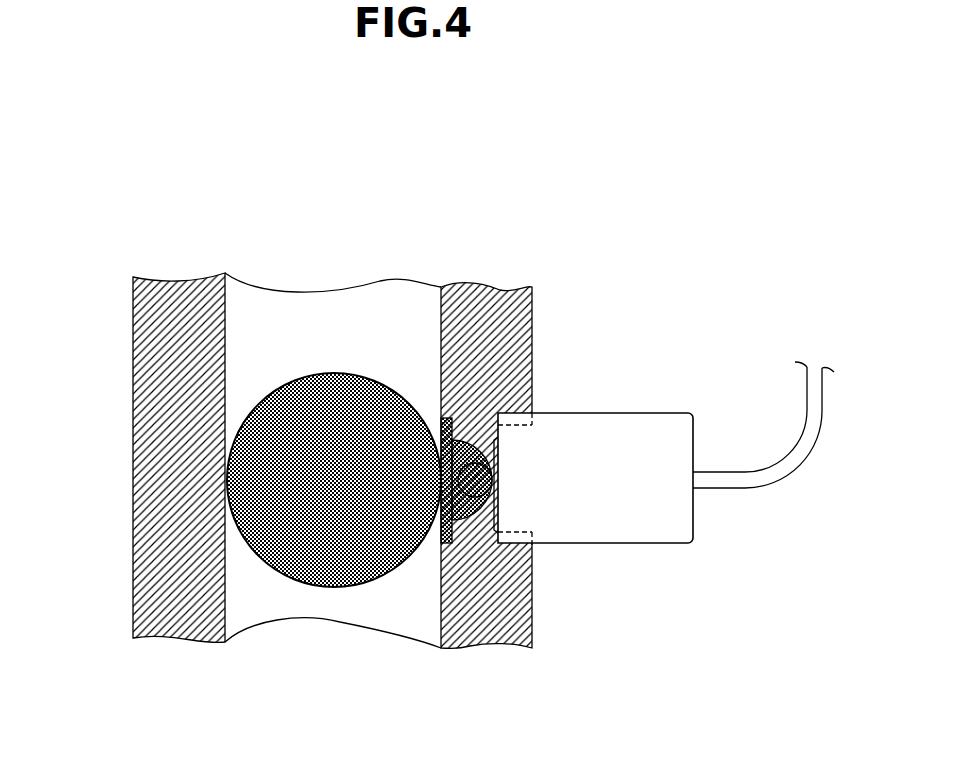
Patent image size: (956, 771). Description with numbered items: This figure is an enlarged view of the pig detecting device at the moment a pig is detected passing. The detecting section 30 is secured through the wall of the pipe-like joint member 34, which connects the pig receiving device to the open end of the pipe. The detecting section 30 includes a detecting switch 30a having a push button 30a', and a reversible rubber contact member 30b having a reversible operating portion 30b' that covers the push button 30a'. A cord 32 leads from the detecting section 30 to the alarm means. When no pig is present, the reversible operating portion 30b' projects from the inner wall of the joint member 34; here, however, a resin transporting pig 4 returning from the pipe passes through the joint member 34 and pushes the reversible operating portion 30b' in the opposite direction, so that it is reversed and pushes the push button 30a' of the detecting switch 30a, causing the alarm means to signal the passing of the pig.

The pipe-like joint member 34 is at (157, 305).
The resin transporting pig 4 is at (382, 400).
The detecting section 30 is at (586, 513).
The detecting switch 30a is at (612, 522).
The push button 30a' is at (547, 522).
The reversible rubber contact member 30b is at (395, 573).
The reversible operating portion 30b' is at (441, 568).
The cord 32 is at (800, 446).